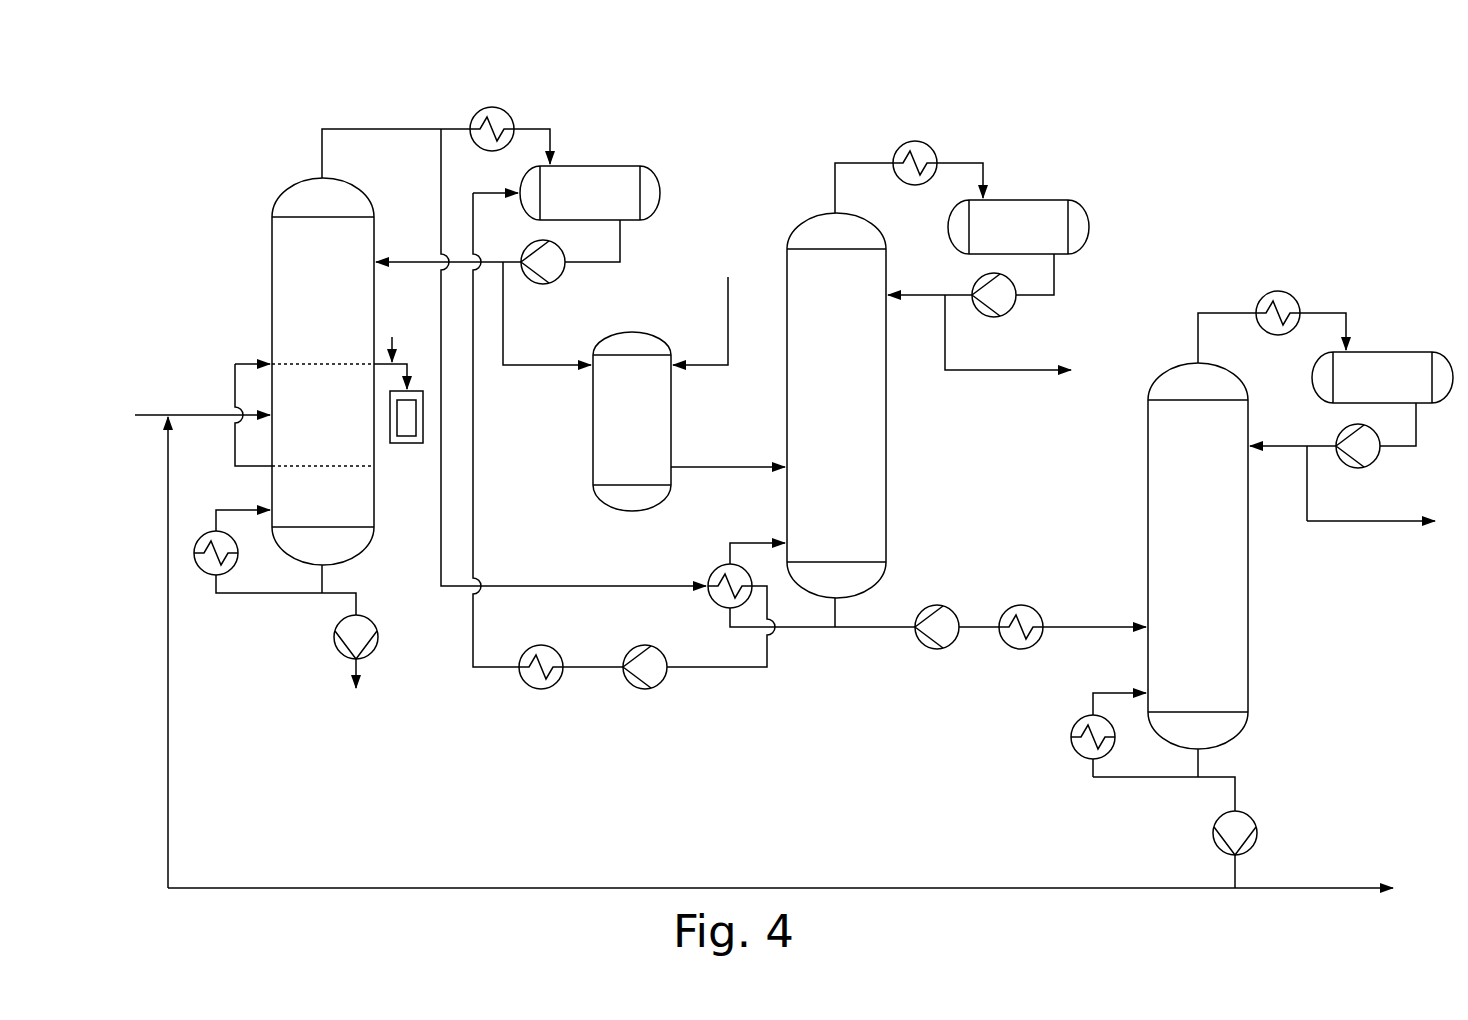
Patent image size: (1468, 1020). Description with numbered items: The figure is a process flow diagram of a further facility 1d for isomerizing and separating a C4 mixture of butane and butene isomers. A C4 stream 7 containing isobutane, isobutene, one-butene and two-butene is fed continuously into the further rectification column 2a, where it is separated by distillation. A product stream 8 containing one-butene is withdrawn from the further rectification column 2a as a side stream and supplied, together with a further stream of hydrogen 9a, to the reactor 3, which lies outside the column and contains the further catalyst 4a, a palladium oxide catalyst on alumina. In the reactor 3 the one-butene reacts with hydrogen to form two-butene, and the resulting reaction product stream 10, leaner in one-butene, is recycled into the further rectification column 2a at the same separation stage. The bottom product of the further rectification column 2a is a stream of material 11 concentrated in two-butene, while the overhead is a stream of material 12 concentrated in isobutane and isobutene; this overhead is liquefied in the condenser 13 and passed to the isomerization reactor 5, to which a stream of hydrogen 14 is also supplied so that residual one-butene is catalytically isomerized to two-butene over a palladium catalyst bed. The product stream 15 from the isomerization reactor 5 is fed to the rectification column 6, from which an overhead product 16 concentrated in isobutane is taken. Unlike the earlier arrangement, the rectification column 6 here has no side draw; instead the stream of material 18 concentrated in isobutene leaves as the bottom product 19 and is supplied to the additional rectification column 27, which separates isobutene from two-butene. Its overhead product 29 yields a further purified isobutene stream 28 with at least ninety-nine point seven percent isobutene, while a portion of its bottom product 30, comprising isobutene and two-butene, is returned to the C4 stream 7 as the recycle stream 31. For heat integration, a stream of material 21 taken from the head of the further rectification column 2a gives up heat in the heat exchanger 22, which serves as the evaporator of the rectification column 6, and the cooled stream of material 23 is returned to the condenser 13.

The facility 1d is at (196, 143).
The further rectification column 2a is at (297, 272).
The reactor 3 is at (416, 444).
The further catalyst 4a is at (406, 424).
The isomerization reactor 5 is at (615, 425).
The rectification column 6 is at (858, 371).
The C4 stream 7 is at (148, 418).
The product stream 8 is at (404, 362).
The further stream of hydrogen 9a is at (392, 337).
The reaction product stream 10 is at (235, 380).
The stream of material 11 is at (333, 593).
The stream of material 12 is at (503, 301).
The condenser 13 is at (585, 185).
The stream of hydrogen 14 is at (727, 318).
The product stream 15 is at (710, 466).
The overhead product 16 is at (1025, 373).
The stream of material 18 is at (1073, 622).
The bottom product 19 is at (883, 630).
The stream of material 21 is at (440, 567).
The heat exchanger 22 is at (715, 570).
The stream of material 23 is at (477, 546).
The additional rectification column 27 is at (1228, 607).
The further purified isobutene stream 28 is at (1388, 525).
The overhead product 29 is at (1307, 480).
The bottom product 30 is at (1228, 777).
The recycle stream 31 is at (848, 886).